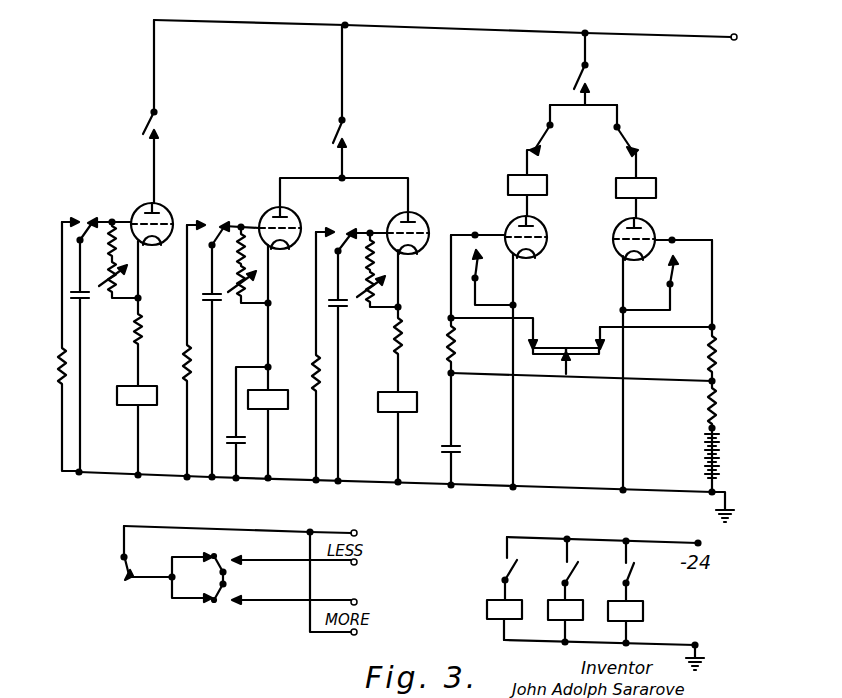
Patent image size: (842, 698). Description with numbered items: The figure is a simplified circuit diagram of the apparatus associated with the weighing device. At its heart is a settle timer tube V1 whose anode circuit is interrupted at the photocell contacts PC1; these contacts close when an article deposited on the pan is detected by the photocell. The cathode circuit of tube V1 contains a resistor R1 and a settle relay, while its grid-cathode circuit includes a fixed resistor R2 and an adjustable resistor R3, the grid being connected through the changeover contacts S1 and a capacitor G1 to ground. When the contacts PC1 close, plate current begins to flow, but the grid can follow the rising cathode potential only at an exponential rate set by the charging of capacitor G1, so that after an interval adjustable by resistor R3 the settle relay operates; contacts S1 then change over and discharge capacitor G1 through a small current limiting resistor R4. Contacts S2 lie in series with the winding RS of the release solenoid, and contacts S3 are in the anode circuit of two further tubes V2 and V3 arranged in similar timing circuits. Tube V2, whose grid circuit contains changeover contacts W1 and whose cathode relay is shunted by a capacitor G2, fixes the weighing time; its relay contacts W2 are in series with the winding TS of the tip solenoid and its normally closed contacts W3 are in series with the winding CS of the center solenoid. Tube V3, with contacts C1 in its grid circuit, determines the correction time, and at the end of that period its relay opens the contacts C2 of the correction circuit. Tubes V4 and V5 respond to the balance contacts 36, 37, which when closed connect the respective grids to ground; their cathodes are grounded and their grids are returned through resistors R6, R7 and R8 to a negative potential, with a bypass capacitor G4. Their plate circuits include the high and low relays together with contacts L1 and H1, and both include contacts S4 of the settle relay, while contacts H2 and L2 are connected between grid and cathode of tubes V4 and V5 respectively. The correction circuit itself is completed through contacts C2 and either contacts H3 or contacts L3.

The photocell contacts PC1 is at (171, 111).
The relay S contacts S3 is at (354, 101).
The relay S contacts S4 is at (598, 69).
The low relay contacts L1 is at (532, 140).
The high relay contacts H1 is at (635, 141).
The settle timer tube V1 is at (165, 211).
The weighing timer tube V2 is at (292, 214).
The correction timer tube V3 is at (421, 219).
The balance responding tube V4 is at (545, 222).
The balance responding tube V5 is at (652, 226).
The relay S changeover contacts S1 is at (96, 219).
The relay W changeover contacts W1 is at (223, 225).
The relay C contacts C1 is at (351, 344).
The cathode resistor R1 is at (152, 313).
The fixed resistor R2 is at (118, 246).
The adjustable resistor R3 is at (120, 284).
The current limiting resistor R4 is at (48, 346).
The capacitor G1 is at (91, 356).
The capacitor G2 is at (248, 450).
The bypass capacitor G4 is at (465, 429).
The grid return resistor R6 is at (466, 304).
The grid return resistor R7 is at (695, 310).
The grid return resistor R8 is at (691, 402).
The high relay contacts H2 is at (493, 277).
The low relay contacts L2 is at (675, 283).
The balance contact 37 is at (542, 362).
The balance contact 36 is at (588, 362).
The correction relay contacts C2 is at (132, 560).
The high relay contacts H3 is at (261, 555).
The low relay contacts L3 is at (258, 603).
The relay S contacts S2 is at (496, 560).
The release solenoid winding RS is at (489, 610).
The tip solenoid winding TS is at (554, 612).
The relay W contacts W2 is at (587, 563).
The relay W normally closed contacts W3 is at (646, 564).
The center solenoid winding CS is at (637, 613).